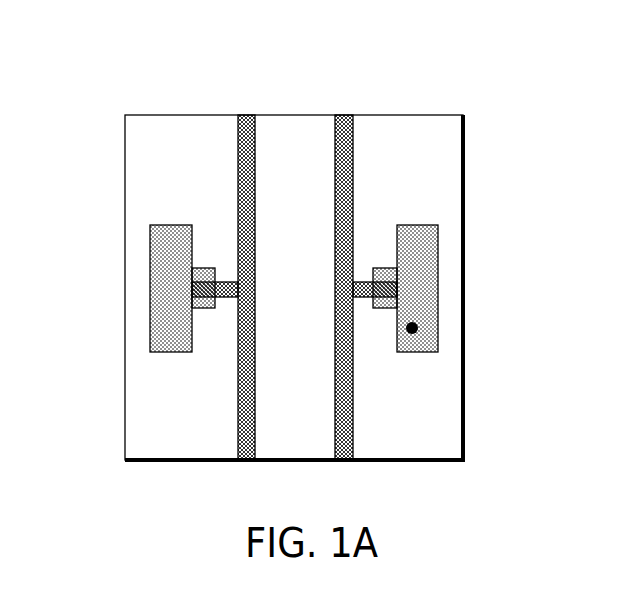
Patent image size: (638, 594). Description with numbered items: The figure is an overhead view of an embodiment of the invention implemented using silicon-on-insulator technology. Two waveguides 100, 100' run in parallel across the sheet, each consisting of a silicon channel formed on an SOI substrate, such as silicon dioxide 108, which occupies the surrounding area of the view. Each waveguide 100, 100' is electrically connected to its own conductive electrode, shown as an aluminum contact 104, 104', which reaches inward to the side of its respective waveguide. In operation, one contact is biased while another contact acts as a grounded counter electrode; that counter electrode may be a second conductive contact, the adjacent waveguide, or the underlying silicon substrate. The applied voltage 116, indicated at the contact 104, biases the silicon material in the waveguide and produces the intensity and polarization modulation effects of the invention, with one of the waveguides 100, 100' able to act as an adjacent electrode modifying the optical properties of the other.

The waveguide 100 is at (379, 287).
The waveguide 100' is at (208, 287).
The aluminum contact 104 is at (433, 286).
The aluminum contact 104' is at (155, 285).
The SOI substrate 108 is at (193, 433).
The applied voltage 116 is at (417, 339).